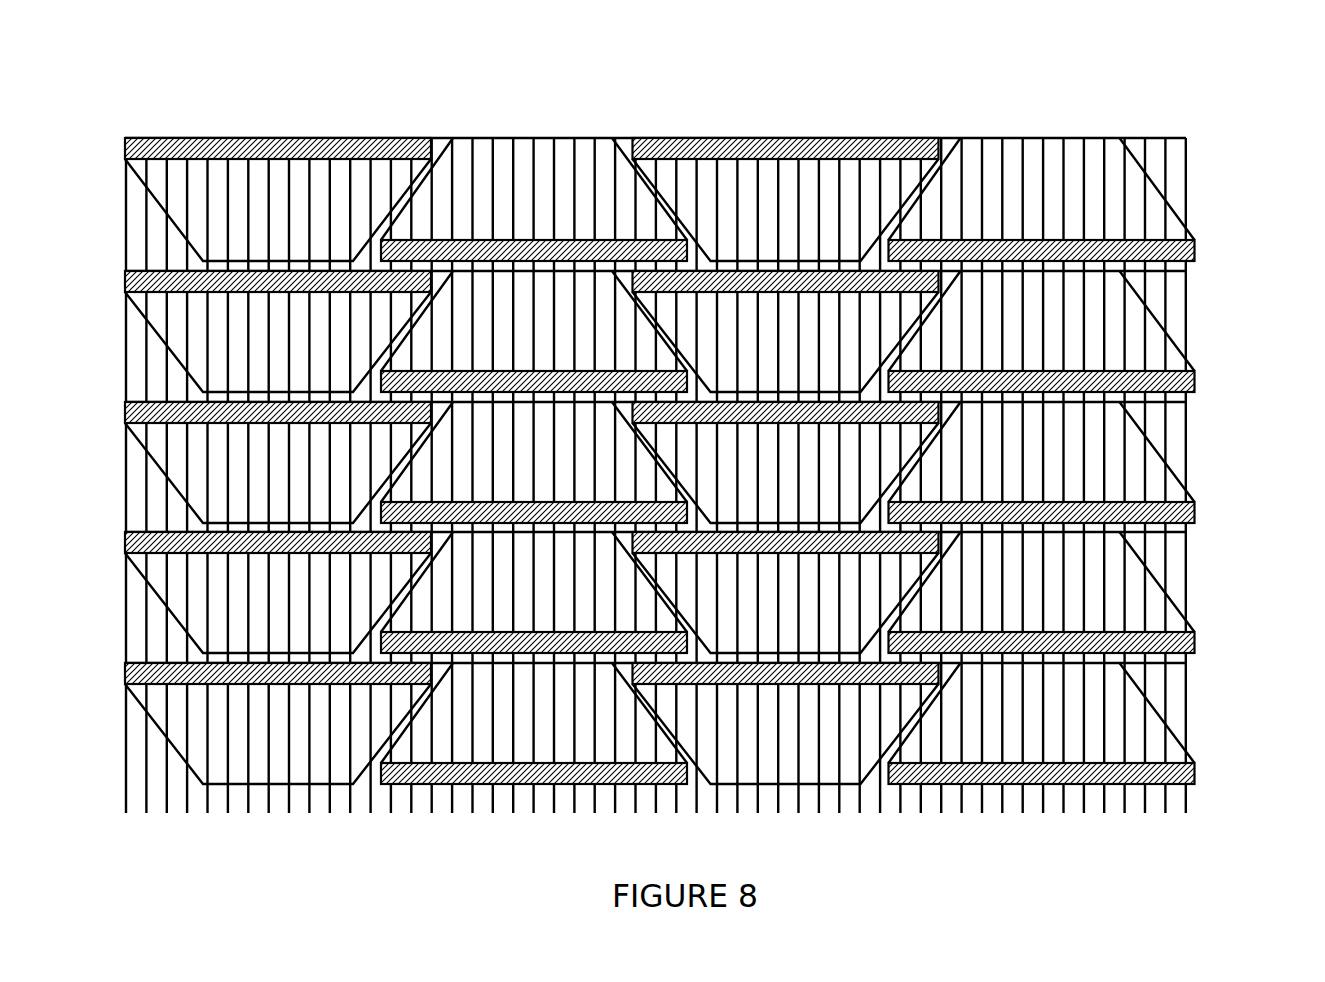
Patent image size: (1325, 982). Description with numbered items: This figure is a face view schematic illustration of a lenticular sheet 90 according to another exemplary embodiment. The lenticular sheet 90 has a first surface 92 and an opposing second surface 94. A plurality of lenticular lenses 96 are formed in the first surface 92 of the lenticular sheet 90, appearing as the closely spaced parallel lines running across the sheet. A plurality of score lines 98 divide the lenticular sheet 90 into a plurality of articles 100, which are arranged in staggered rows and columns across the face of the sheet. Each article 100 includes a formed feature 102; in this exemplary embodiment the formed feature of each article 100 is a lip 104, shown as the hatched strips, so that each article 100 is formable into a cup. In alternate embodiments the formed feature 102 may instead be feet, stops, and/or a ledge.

The lenticular sheet 90 is at (657, 424).
The first surface 92 is at (1178, 152).
The second surface 94 is at (1173, 193).
The lenticular lenses 96 is at (542, 172).
The score lines 98 is at (157, 205).
The article 100 is at (298, 172).
The formed feature 102 is at (385, 125).
The lip 104 is at (173, 137).